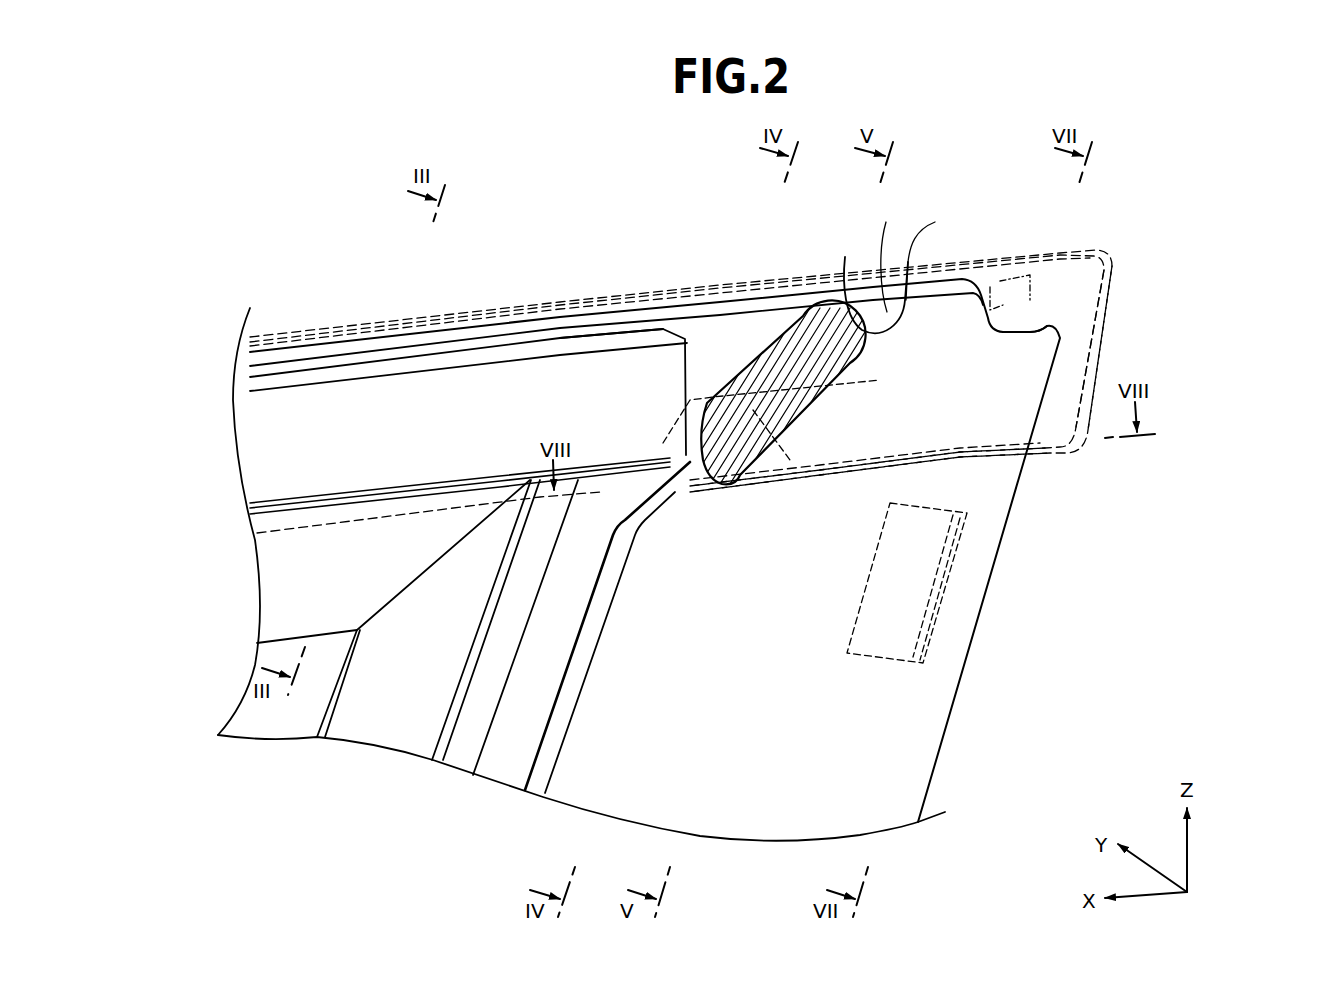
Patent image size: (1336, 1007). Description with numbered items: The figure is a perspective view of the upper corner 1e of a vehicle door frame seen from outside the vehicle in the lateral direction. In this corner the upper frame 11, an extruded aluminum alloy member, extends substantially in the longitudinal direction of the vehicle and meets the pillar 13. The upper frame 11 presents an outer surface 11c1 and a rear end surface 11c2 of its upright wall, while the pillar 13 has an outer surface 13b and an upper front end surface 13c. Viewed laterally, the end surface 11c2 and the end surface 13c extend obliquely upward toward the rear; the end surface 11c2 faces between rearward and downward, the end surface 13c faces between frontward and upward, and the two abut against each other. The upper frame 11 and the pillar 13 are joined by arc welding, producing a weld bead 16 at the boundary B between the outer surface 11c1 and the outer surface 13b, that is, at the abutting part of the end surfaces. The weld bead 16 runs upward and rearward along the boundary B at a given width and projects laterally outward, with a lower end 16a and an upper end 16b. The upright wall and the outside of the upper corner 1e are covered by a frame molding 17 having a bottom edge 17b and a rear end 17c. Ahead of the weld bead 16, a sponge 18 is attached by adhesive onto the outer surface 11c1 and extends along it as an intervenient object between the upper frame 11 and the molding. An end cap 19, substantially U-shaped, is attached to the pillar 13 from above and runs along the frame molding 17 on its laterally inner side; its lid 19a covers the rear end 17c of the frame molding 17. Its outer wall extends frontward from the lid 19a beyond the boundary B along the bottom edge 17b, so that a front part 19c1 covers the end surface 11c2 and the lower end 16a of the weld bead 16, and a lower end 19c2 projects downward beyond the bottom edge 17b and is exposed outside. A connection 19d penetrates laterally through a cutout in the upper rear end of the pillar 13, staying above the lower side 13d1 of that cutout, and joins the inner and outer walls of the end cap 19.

The upper corner 1e is at (1144, 154).
The upper frame 11 is at (306, 345).
The outer surface 11c1 is at (703, 347).
The rear end surface 11c2 is at (892, 255).
The pillar 13 is at (935, 780).
The outer surface 13b is at (932, 697).
The upper front end surface 13c is at (845, 257).
The lower side 13d1 is at (1047, 312).
The weld bead 16 is at (758, 350).
The lower end 16a is at (660, 487).
The upper end 16b is at (940, 256).
The frame molding 17 is at (360, 320).
The bottom edge 17b is at (967, 472).
The rear end 17c is at (1118, 286).
The sponge 18 is at (260, 374).
The end cap 19 is at (1114, 255).
The lid 19a is at (1113, 312).
The front part 19c1 is at (663, 443).
The lower end 19c2 is at (643, 498).
The connection 19d is at (1030, 256).
The boundary B is at (795, 490).